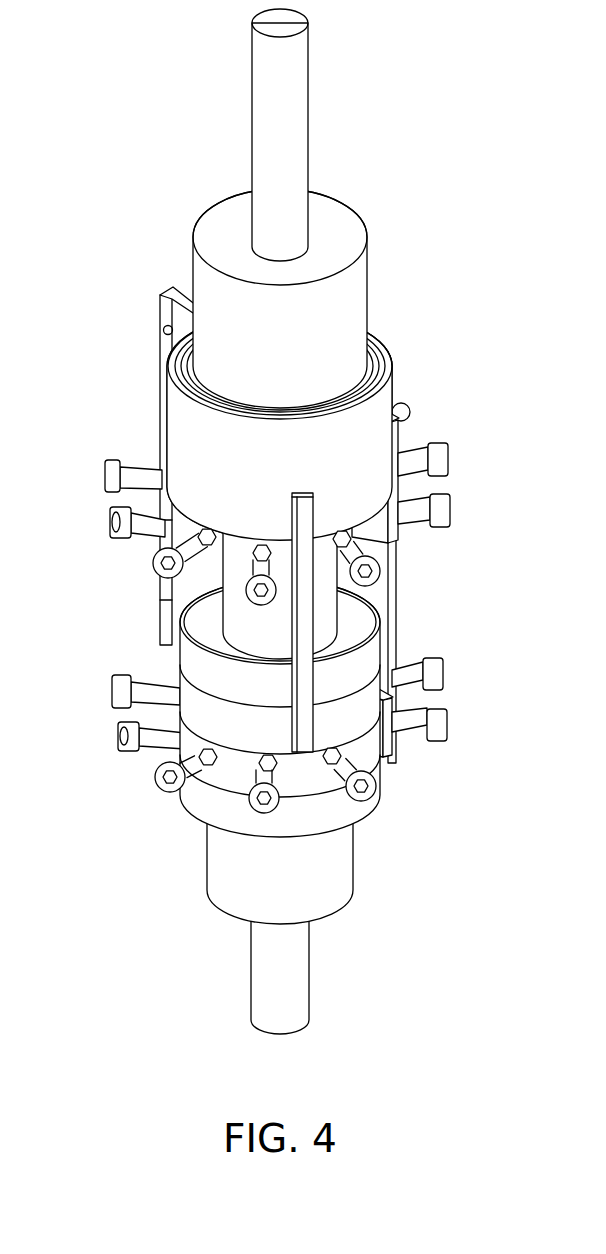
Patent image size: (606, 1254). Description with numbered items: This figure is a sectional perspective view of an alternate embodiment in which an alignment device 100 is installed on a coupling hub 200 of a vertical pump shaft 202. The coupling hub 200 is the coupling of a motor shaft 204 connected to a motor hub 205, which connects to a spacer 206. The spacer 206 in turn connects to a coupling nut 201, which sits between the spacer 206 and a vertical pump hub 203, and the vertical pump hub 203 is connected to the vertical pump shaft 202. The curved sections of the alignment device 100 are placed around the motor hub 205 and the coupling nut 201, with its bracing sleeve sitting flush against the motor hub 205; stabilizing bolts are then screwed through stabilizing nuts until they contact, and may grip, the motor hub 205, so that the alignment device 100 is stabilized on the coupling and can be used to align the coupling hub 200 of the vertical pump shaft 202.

The alignment device 100 is at (138, 352).
The coupling hub 200 is at (257, 752).
The coupling nut 201 is at (239, 773).
The vertical pump shaft 202 is at (311, 975).
The vertical pump hub 203 is at (354, 842).
The motor shaft 204 is at (252, 97).
The motor hub 205 is at (367, 283).
The spacer 206 is at (220, 612).